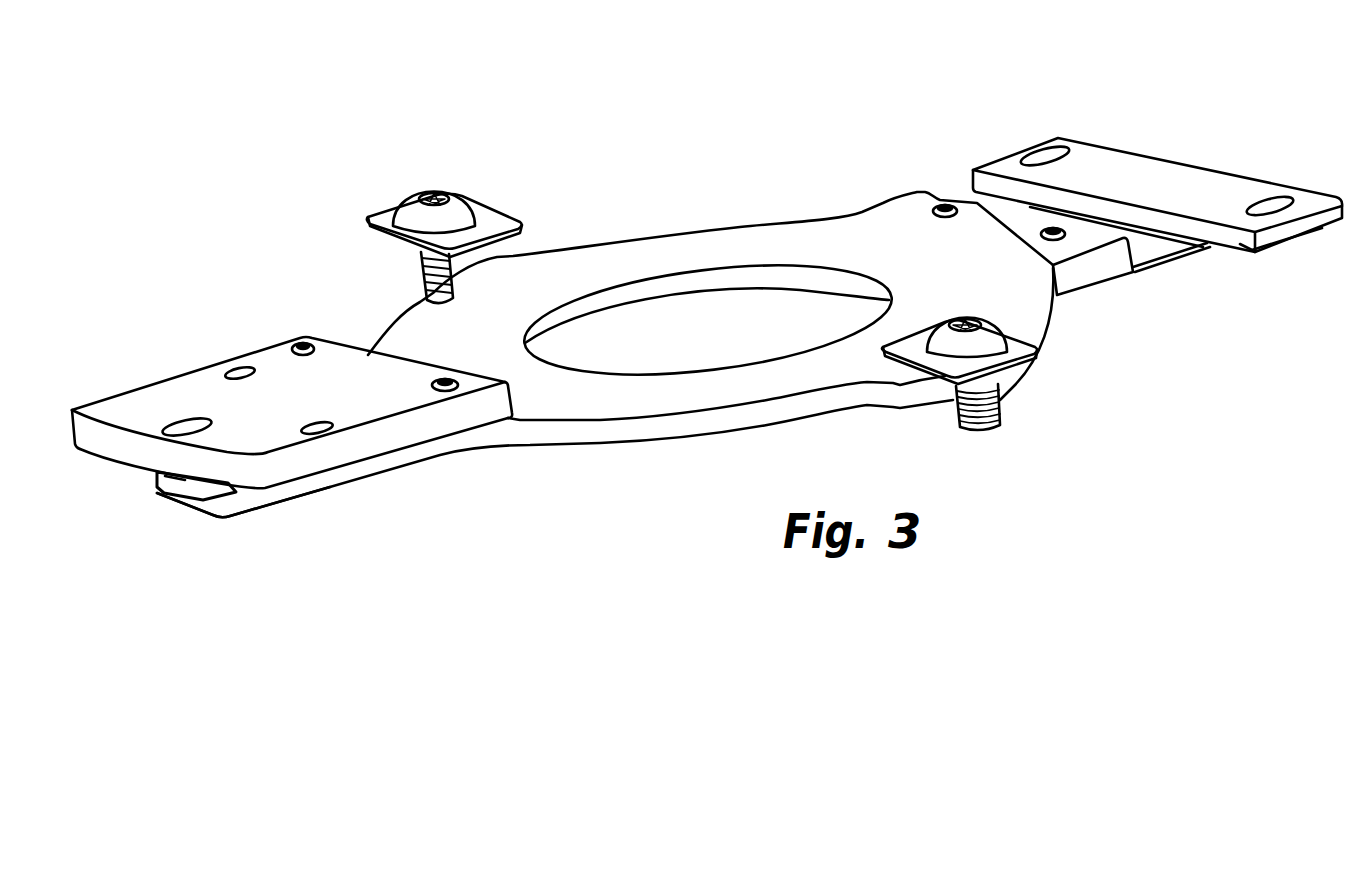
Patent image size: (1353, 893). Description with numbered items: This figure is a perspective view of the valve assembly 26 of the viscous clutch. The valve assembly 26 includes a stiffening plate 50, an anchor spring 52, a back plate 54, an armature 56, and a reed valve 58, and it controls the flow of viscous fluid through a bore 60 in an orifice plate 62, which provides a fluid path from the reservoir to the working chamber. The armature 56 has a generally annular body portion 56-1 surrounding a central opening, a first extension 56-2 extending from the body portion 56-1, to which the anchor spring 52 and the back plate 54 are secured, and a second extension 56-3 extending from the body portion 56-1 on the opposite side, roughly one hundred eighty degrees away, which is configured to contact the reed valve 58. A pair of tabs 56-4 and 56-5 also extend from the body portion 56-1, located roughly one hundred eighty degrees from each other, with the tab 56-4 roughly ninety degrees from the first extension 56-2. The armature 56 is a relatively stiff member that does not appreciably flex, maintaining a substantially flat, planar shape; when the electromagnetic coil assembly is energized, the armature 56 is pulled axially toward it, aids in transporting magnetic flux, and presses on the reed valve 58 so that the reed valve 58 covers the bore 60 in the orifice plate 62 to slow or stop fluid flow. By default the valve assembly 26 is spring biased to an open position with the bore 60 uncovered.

The valve assembly 26 is at (637, 118).
The stiffening plate 50 is at (1198, 183).
The anchor spring 52 is at (1153, 245).
The back plate 54 is at (1113, 277).
The armature 56 is at (617, 432).
The body portion 56-1 is at (728, 242).
The first extension 56-2 is at (978, 223).
The second extension 56-3 is at (280, 493).
The tab 56-4 is at (908, 378).
The tab 56-5 is at (530, 267).
The reed valve 58 is at (184, 485).
The bore 60 is at (187, 420).
The orifice plate 62 is at (127, 410).